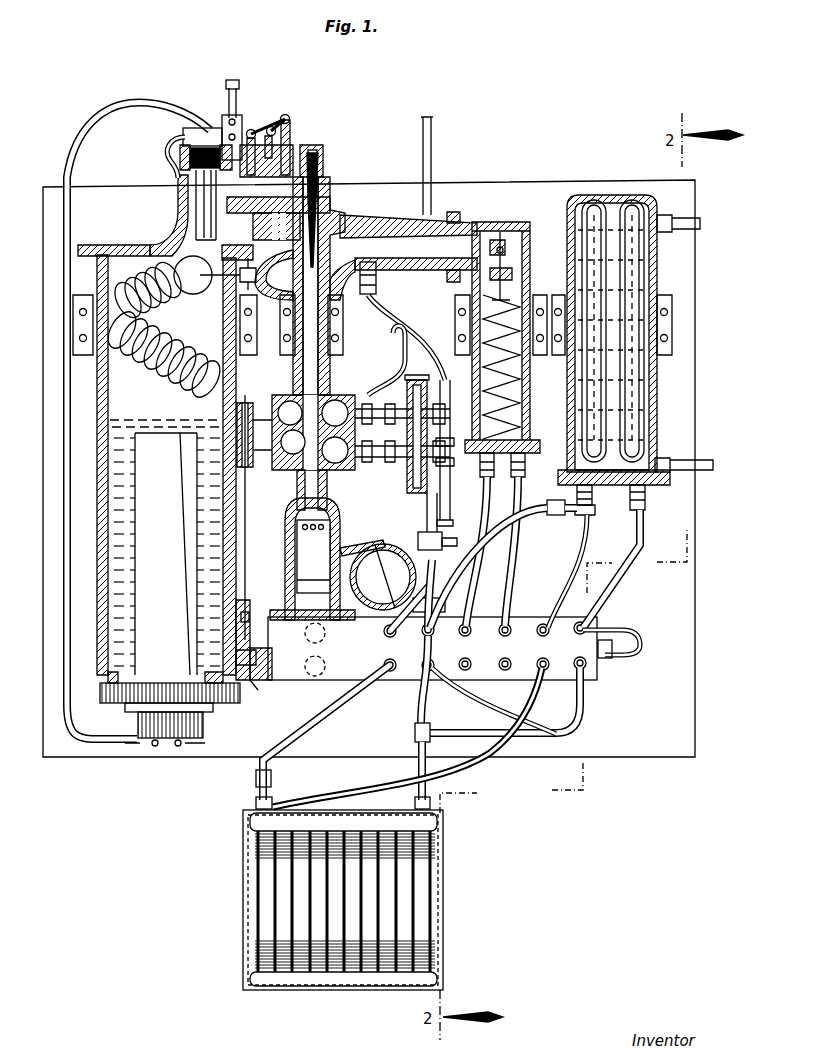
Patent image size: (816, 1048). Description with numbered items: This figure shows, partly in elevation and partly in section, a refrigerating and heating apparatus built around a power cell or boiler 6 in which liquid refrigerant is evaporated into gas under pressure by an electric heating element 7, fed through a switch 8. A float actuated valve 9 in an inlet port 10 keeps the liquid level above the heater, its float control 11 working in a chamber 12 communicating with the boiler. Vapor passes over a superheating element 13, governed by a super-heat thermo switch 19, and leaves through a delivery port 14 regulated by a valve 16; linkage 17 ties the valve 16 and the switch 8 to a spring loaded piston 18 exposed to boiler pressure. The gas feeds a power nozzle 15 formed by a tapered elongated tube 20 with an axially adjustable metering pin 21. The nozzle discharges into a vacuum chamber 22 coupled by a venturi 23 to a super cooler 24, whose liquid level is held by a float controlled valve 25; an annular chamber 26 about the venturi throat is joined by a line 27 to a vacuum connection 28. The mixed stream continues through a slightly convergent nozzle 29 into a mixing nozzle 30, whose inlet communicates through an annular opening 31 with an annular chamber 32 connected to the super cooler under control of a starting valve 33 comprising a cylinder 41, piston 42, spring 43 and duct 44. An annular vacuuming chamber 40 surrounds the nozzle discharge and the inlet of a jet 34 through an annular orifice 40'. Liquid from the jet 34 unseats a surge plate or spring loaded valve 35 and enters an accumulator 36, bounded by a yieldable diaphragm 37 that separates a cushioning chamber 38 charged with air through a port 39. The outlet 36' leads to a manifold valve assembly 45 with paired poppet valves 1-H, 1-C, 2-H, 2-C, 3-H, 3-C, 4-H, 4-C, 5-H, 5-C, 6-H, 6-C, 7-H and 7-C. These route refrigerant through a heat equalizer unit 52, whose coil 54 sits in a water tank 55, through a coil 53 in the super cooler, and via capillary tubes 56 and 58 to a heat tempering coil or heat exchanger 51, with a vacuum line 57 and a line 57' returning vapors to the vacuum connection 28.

The power cell or boiler 6 is at (88, 636).
The electric heating element 7 is at (120, 590).
The switch 8 is at (242, 120).
The float actuated valve 9 is at (255, 675).
The inlet port 10 is at (222, 655).
The float control 11 is at (237, 408).
The chamber 12 is at (255, 470).
The superheating element 13 is at (155, 380).
The delivery port 14 is at (265, 222).
The power nozzle 15 is at (330, 205).
The valve 16 is at (292, 193).
The linkage 17 is at (287, 109).
The piston 18 is at (260, 182).
The super-heat thermo switch 19 is at (205, 128).
The elongated tube 20 is at (310, 270).
The metering pin 21 is at (306, 236).
The vacuum chamber 22 is at (293, 290).
The venturi 23 is at (393, 246).
The super cooler 24 is at (510, 230).
The float controlled valve 25 is at (510, 258).
The annular chamber 26 is at (378, 270).
The line 27 is at (393, 320).
The vacuum connection 28 is at (452, 470).
The nozzle 29 is at (325, 395).
The mixing nozzle 30 is at (303, 445).
The annular opening 31 is at (302, 413).
The annular chamber 32 is at (340, 405).
The starting valve 33 is at (424, 511).
The jet 34 is at (297, 505).
The surge plate or spring loaded valve 35 is at (287, 548).
The pressure chamber or accumulator 36 is at (341, 549).
The outlet 36' is at (301, 649).
The yieldable diaphragm 37 is at (366, 578).
The cushioning chamber 38 is at (416, 545).
The port 39 is at (412, 594).
The annular vacuuming chamber 40 is at (345, 458).
The annular orifice 40' is at (269, 459).
The cylinder 41 is at (408, 462).
The piston 42 is at (412, 440).
The spring 43 is at (408, 488).
The duct 44 is at (390, 355).
The manifold valve assembly 45 is at (298, 695).
The heat tempering coil or heat exchanger 51 is at (445, 920).
The heat equalizer unit 52 is at (628, 197).
The coil 53 is at (532, 420).
The coil 54 is at (620, 415).
The tank 55 is at (655, 368).
The capillary tube 56 is at (483, 768).
The vacuum line 57 is at (406, 766).
The line 57' is at (503, 564).
The capillary tube 58 is at (588, 556).
The valve 1-H is at (306, 640).
The valve 1-C is at (305, 668).
The valve 2-H is at (383, 631).
The valve 2-C is at (388, 673).
The valve 3-H is at (434, 637).
The valve 3-C is at (432, 672).
The valve 4-H is at (470, 625).
The valve 4-C is at (466, 670).
The valve 5-H is at (511, 624).
The valve 5-C is at (506, 670).
The valve 6-H is at (552, 625).
The valve 6-C is at (543, 670).
The valve 7-H is at (593, 630).
The valve 7-C is at (590, 665).